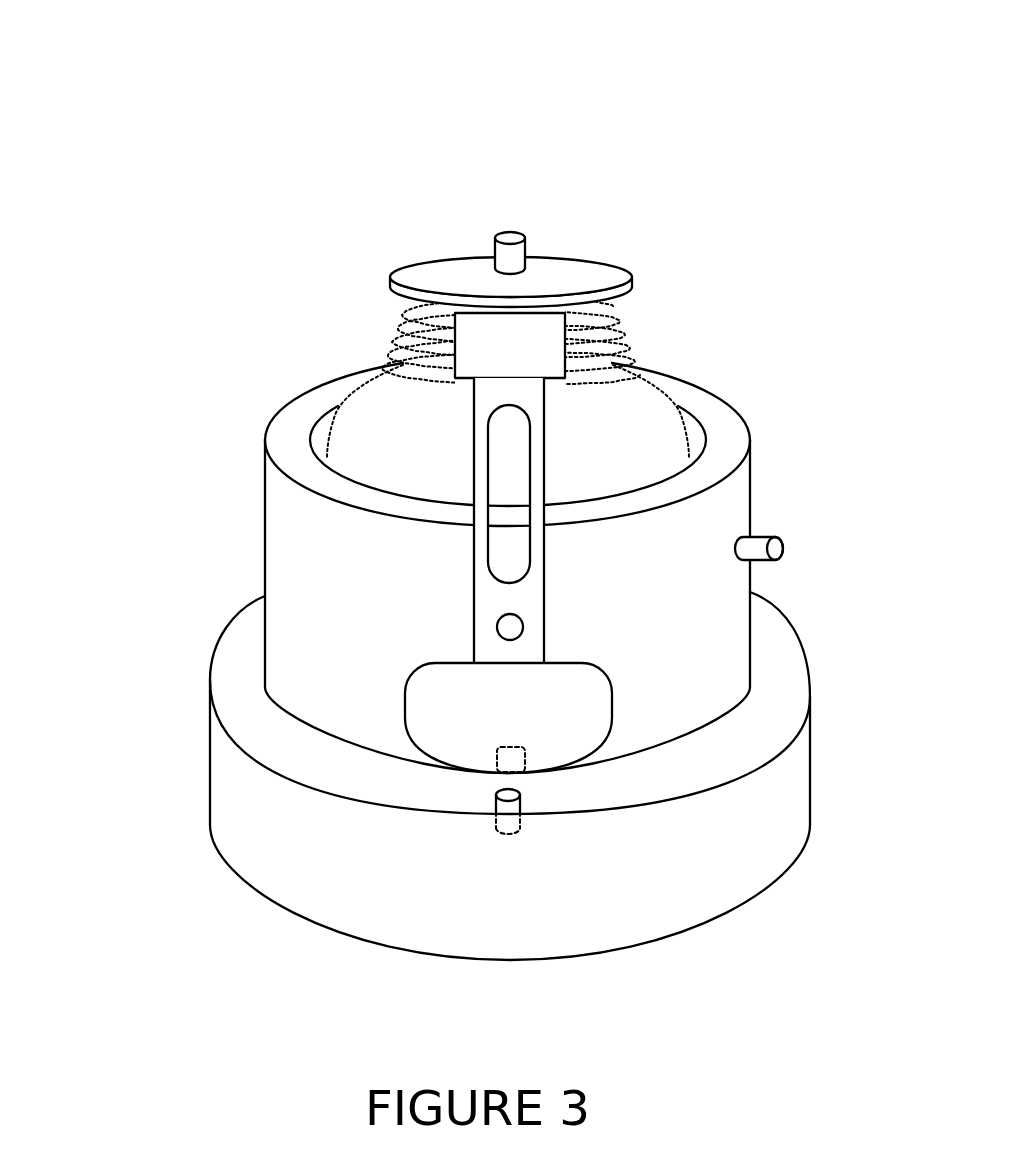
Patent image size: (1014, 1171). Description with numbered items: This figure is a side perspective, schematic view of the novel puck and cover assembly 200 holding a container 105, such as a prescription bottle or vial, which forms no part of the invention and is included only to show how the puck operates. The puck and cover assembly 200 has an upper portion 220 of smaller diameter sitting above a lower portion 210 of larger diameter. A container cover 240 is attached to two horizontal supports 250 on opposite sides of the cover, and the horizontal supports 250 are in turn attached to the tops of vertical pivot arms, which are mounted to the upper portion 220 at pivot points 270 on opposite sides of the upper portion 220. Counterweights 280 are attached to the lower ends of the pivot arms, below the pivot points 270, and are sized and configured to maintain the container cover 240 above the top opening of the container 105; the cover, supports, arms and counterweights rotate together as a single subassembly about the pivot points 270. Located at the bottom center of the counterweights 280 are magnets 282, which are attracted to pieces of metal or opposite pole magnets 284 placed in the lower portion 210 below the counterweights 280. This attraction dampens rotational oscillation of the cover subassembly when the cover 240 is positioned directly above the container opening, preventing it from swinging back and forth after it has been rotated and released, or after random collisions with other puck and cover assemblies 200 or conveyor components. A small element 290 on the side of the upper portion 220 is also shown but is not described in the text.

The puck and cover assembly 200 is at (110, 103).
The container 105 is at (383, 415).
The lower portion 210 is at (185, 658).
The upper portion 220 is at (438, 557).
The container cover 240 is at (555, 277).
The horizontal supports 250 is at (527, 347).
The pivot points 270 is at (497, 627).
The counterweights 280 is at (460, 720).
The magnets 282 is at (513, 758).
The pieces of metal or opposite pole magnets 284 is at (510, 812).
The port 290 is at (763, 548).